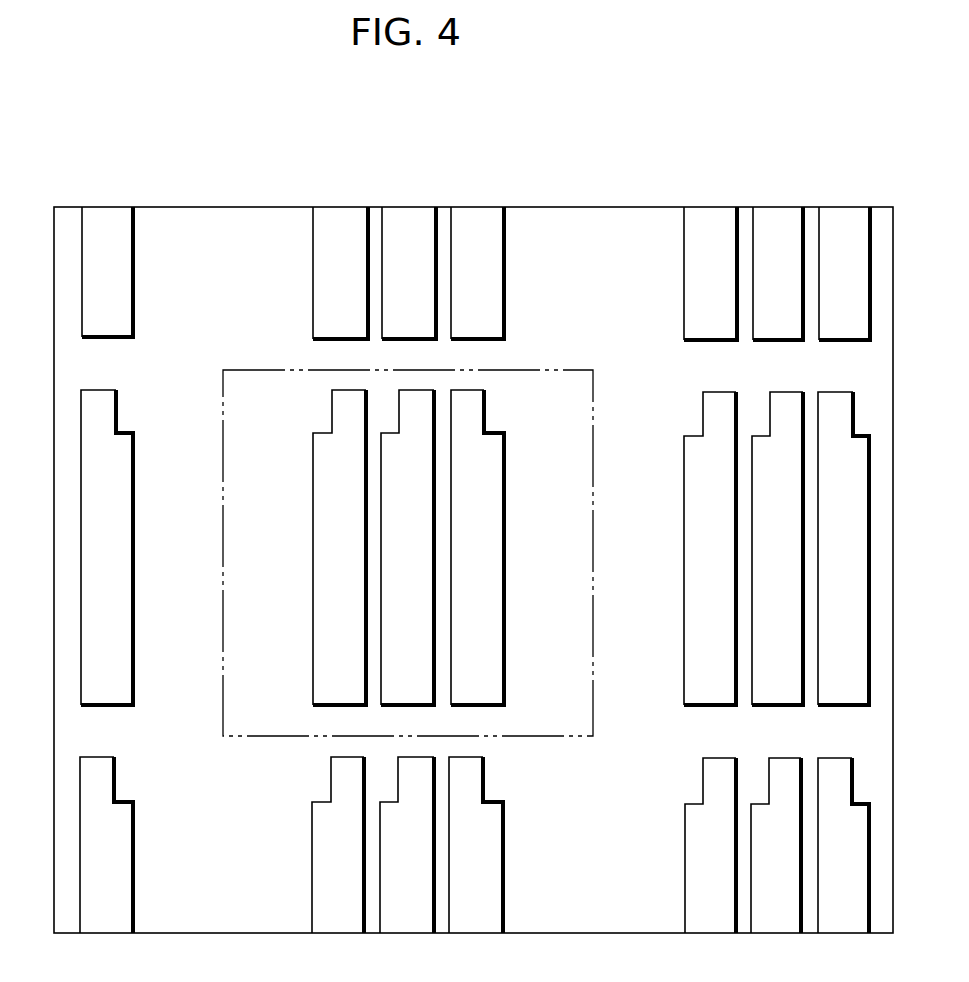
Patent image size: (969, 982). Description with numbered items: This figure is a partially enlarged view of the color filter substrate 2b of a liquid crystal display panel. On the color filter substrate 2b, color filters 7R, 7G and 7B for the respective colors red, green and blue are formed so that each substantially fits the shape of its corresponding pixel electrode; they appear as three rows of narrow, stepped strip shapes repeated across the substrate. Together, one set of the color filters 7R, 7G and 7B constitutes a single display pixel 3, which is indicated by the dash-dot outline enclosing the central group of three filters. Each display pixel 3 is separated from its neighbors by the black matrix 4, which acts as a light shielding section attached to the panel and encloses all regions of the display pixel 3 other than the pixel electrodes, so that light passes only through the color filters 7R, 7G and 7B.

The color filter substrate 2b is at (696, 185).
The display pixel 3 is at (277, 370).
The black matrix 4 is at (603, 238).
The color filter for red 7R is at (312, 676).
The color filter for green 7G is at (381, 600).
The color filter for blue 7B is at (504, 625).